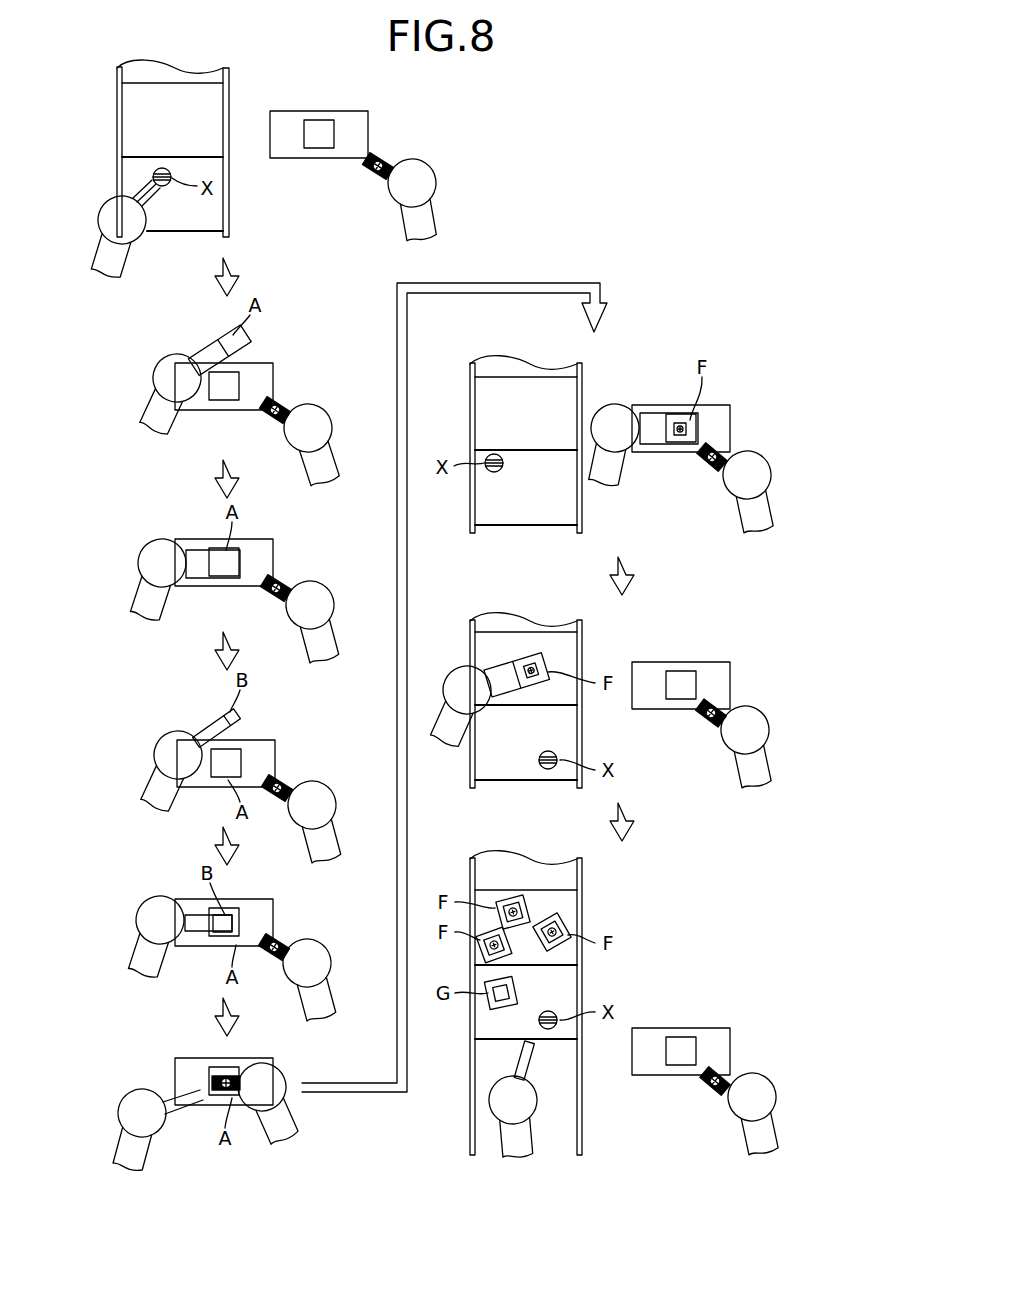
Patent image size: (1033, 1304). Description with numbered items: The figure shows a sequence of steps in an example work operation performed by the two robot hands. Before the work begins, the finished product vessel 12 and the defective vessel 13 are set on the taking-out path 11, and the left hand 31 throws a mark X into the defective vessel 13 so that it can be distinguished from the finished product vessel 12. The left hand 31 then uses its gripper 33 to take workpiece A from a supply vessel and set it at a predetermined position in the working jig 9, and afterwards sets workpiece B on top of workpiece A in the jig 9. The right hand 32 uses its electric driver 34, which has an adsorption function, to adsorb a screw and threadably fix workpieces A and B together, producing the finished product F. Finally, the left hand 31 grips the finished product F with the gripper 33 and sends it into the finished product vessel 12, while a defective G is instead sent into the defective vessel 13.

The working jig 9 is at (326, 110).
The taking-out path 11 is at (231, 194).
The finished product vessel 12 is at (127, 121).
The defective vessel 13 is at (127, 184).
The left hand 31 is at (101, 255).
The right hand 32 is at (432, 207).
The gripper 33 is at (157, 212).
The electric driver 34 is at (380, 158).